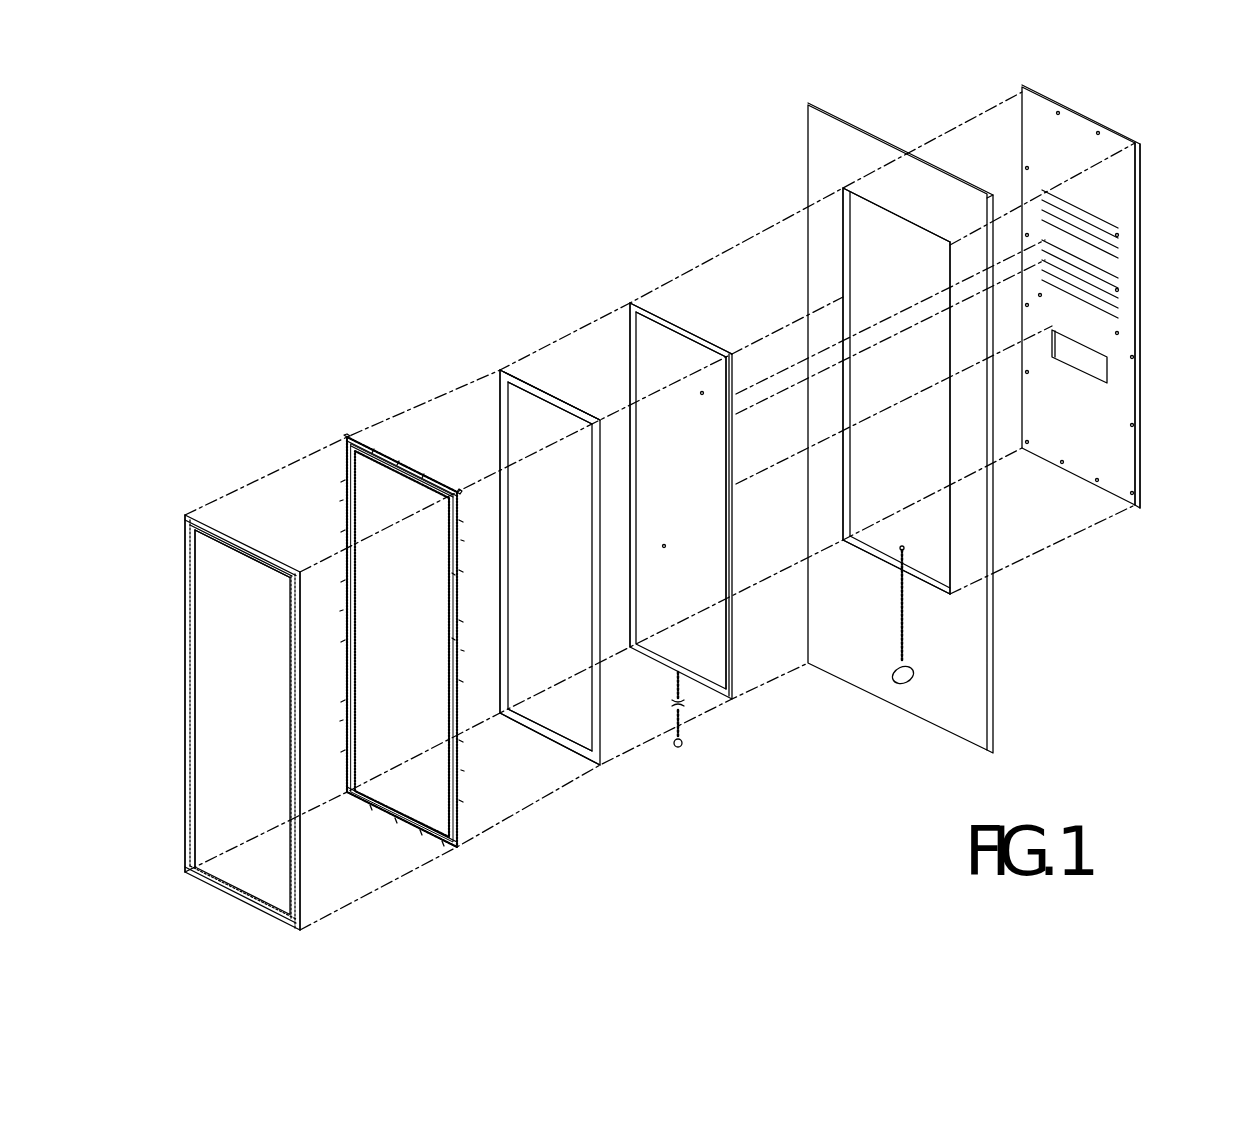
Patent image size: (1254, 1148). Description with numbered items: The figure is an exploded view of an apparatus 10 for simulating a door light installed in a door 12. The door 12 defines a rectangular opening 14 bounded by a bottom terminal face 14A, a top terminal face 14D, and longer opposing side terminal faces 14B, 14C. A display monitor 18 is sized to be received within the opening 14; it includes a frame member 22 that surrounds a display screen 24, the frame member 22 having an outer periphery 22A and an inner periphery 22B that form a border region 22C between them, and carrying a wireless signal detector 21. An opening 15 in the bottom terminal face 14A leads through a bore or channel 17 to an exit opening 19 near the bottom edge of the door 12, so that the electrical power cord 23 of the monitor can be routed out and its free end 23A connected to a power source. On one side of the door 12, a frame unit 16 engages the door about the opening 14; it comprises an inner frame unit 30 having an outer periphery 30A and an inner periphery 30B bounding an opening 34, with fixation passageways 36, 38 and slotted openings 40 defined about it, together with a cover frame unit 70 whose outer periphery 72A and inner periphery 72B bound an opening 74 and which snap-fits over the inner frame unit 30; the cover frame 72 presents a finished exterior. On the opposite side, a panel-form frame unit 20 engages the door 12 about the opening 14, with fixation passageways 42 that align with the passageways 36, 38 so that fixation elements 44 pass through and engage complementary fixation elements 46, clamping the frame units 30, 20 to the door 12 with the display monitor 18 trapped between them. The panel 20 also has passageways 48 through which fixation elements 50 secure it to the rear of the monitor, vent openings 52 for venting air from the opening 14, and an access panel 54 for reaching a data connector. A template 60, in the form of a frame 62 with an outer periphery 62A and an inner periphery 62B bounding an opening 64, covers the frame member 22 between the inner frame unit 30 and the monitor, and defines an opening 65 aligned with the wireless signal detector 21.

The apparatus 10 is at (792, 147).
The door 12 is at (956, 722).
The opening 14 is at (866, 226).
The terminal face 14A is at (868, 542).
The terminal face 14B is at (855, 386).
The terminal face 14C is at (950, 478).
The terminal face 14D is at (886, 212).
The opening 15 is at (903, 560).
The frame unit 16 is at (377, 413).
The bore or channel 17 is at (912, 630).
The display monitor 18 is at (711, 273).
The exit opening 19 is at (916, 675).
The frame unit 20 is at (1155, 130).
The wireless signal detector 21 is at (634, 611).
The frame member 22 is at (726, 338).
The outer periphery 22A is at (690, 330).
The inner periphery 22B is at (660, 330).
The border region 22C is at (695, 523).
The electrical power cord 23 is at (675, 684).
The free end 23A is at (683, 744).
The display screen 24 is at (705, 390).
The inner frame unit 30 is at (445, 455).
The outer periphery 30A is at (390, 460).
The inner periphery 30B is at (400, 470).
The opening 34 is at (428, 786).
The fixation passageway 36 is at (348, 664).
The fixation passageway 38 is at (460, 722).
The slotted opening 40 is at (354, 438).
The fixation passageway 42 is at (1131, 258).
The fixation element 44 is at (1150, 208).
The fixation element 46 is at (434, 577).
The passageway 48 is at (1042, 168).
The fixation element 50 is at (1175, 182).
The vent opening 52 is at (1040, 224).
The access panel 54 is at (1080, 372).
The template 60 is at (548, 355).
The frame 62 is at (566, 391).
The outer periphery 62A is at (518, 377).
The inner periphery 62B is at (522, 395).
The opening 64 is at (564, 714).
The opening 65 is at (506, 675).
The cover frame unit 70 is at (214, 486).
The top member of outer frame 72 is at (258, 524).
The outer periphery 72A is at (290, 571).
The inner periphery 72B is at (247, 547).
The opening 74 is at (207, 570).